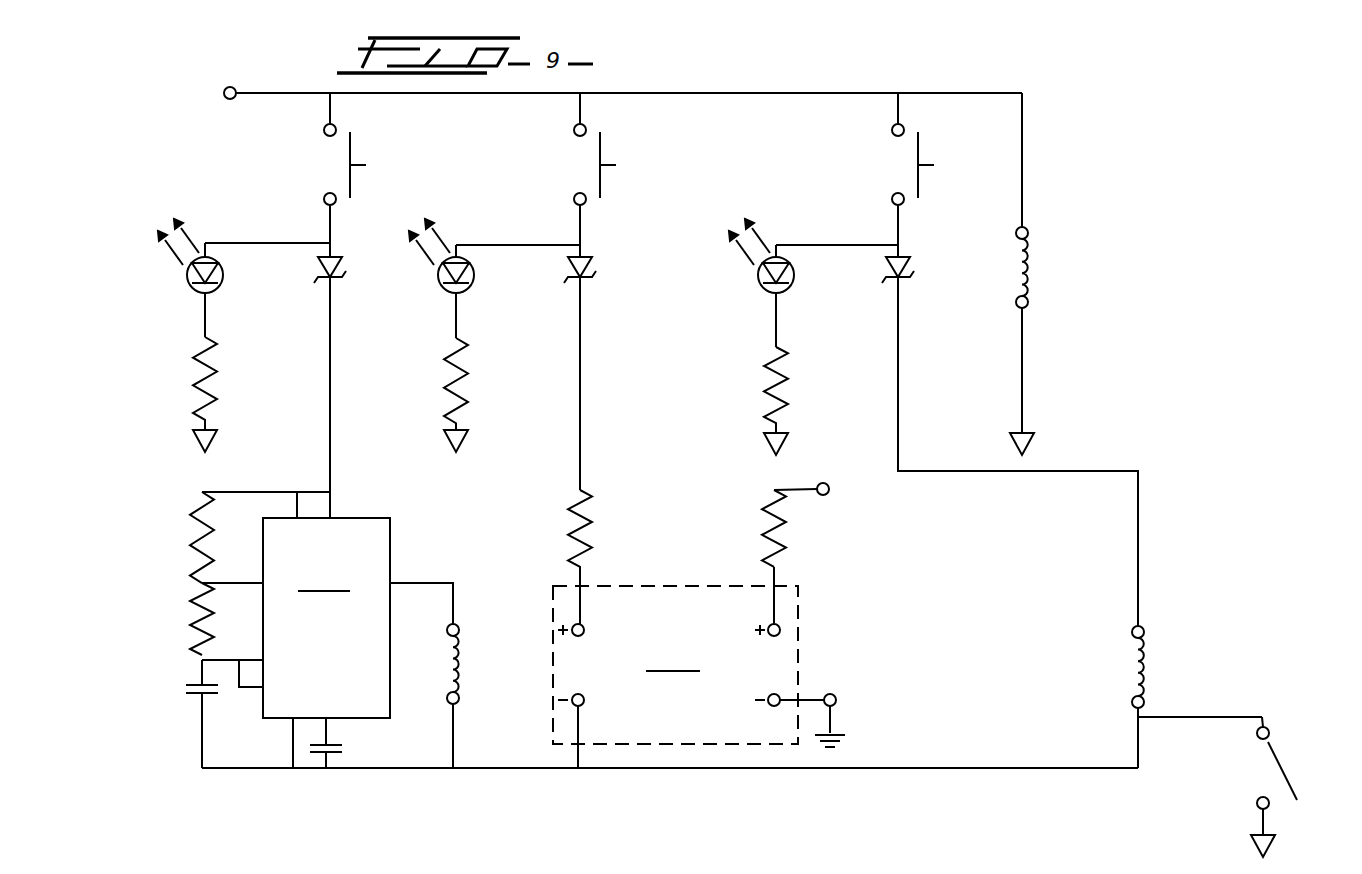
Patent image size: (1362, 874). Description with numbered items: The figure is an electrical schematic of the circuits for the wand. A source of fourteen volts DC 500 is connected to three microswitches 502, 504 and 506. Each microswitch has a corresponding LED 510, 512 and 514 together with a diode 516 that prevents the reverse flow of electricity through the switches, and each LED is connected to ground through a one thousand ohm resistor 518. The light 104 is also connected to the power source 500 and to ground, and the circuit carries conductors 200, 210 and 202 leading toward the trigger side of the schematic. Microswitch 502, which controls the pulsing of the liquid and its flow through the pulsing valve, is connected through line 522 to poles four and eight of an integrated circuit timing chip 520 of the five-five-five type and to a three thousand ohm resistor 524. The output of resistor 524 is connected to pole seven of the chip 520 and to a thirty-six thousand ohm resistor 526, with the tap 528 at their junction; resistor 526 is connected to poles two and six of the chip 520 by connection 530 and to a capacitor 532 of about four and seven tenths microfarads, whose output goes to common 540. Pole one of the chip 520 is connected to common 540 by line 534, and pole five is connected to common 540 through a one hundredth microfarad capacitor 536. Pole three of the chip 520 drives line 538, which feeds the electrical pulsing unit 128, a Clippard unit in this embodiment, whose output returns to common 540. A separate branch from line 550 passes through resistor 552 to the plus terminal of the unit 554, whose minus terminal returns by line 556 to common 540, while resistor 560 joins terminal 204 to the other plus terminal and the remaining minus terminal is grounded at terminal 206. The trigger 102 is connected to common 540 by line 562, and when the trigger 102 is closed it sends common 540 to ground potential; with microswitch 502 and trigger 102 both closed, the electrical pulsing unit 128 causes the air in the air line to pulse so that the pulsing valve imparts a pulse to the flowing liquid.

The source of +14 volts DC 500 is at (236, 90).
The microswitch 502 is at (351, 152).
The microswitch 504 is at (601, 152).
The microswitch 506 is at (919, 152).
The LED 510 is at (223, 275).
The LED 512 is at (475, 273).
The LED 514 is at (794, 277).
The diode 516 is at (343, 272).
The resistor 518 is at (217, 370).
The line 522 is at (330, 393).
The conductor line 550 is at (580, 390).
The light 104 is at (1028, 270).
The conductor line 200 is at (1140, 552).
The coil 210 is at (1145, 650).
The terminal 202 is at (1146, 708).
The line 562 is at (1232, 718).
The trigger 102 is at (1274, 753).
The common 540 is at (545, 770).
The 555 integrated circuit timing chip 520 is at (296, 605).
The 3K ohm resistor 524 is at (196, 532).
The 36K ohm resistor 526 is at (190, 622).
The tap connection 528 is at (205, 583).
The connection line 530 is at (203, 660).
The 4.7 mfd capacitor 532 is at (195, 693).
The connection line 534 is at (293, 750).
The capacitor 536 is at (345, 747).
The line 538 is at (410, 583).
The electrical pulsing unit 128 is at (460, 668).
The resistor 552 is at (590, 535).
The battery / sensor module 554 is at (675, 665).
The connection line 556 is at (580, 755).
The resistor 560 is at (785, 548).
The terminal 204 is at (808, 492).
The ground terminal 206 is at (838, 712).